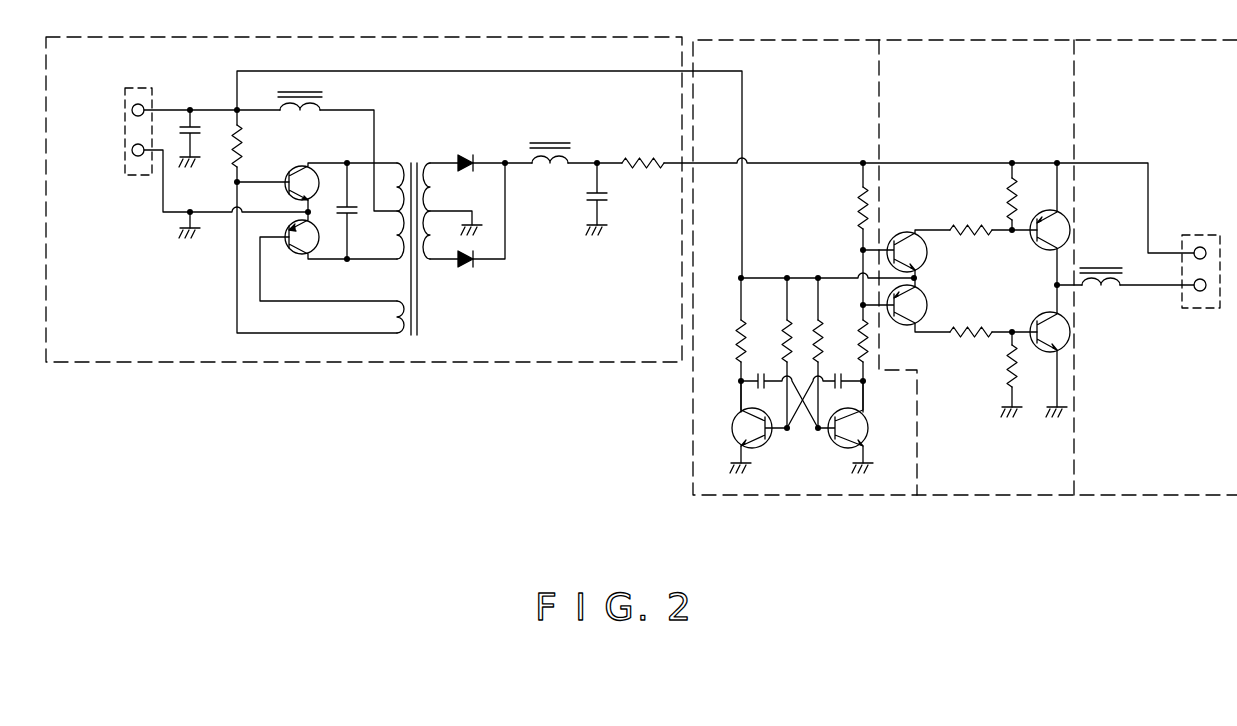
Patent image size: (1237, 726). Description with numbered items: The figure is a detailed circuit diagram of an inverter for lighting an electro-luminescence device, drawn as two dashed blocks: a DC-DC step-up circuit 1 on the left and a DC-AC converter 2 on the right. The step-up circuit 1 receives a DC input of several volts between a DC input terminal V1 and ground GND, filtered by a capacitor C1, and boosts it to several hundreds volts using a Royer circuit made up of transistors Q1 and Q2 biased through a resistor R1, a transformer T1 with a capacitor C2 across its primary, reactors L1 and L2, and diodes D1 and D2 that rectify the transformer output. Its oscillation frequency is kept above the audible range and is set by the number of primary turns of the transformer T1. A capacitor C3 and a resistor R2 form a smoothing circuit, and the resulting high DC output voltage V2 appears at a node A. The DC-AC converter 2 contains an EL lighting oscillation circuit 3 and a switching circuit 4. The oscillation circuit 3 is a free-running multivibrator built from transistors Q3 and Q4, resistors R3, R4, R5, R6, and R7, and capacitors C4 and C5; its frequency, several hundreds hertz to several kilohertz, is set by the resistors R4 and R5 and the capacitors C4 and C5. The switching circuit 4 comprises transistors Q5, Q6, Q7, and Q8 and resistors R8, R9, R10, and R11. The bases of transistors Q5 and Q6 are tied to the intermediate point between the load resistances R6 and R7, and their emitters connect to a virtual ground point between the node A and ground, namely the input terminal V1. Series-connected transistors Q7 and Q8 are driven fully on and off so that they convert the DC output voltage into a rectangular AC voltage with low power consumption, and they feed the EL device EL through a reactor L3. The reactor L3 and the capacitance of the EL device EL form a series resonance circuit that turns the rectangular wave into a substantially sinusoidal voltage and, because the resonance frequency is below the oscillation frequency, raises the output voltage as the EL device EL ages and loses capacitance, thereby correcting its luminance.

The DC-DC step-up circuit 1 is at (213, 37).
The DC-AC converter 2 is at (825, 40).
The EL lighting oscillation circuit 3 is at (844, 115).
The switching circuit 4 is at (959, 115).
The DC input terminal V1 is at (139, 131).
The ground GND is at (187, 189).
The capacitor C1 is at (203, 137).
The resistor R1 is at (247, 160).
The reactor L1 is at (323, 91).
The transistor Q1 is at (298, 166).
The transistor Q2 is at (296, 258).
The capacitor C2 is at (358, 208).
The transformer T1 is at (439, 236).
The diode D1 is at (469, 152).
The diode D2 is at (465, 278).
The reactor L2 is at (553, 135).
The capacitor C3 is at (610, 196).
The resistor R2 is at (646, 149).
The node A is at (706, 163).
The output voltage V2 is at (770, 158).
The resistor R3 is at (730, 326).
The resistor R4 is at (777, 326).
The resistor R5 is at (806, 297).
The load resistance R6 is at (854, 326).
The load resistance R7 is at (854, 206).
The capacitor C4 is at (779, 386).
The capacitor C5 is at (825, 386).
The transistor Q3 is at (732, 444).
The transistor Q4 is at (868, 446).
The transistor Q5 is at (903, 230).
The transistor Q6 is at (907, 330).
The resistor R8 is at (996, 196).
The resistor R9 is at (966, 234).
The resistor R10 is at (973, 322).
The resistor R11 is at (1000, 374).
The transistor Q7 is at (1073, 216).
The transistor Q8 is at (1073, 337).
The reactor L3 is at (1102, 266).
The EL device EL is at (1201, 255).